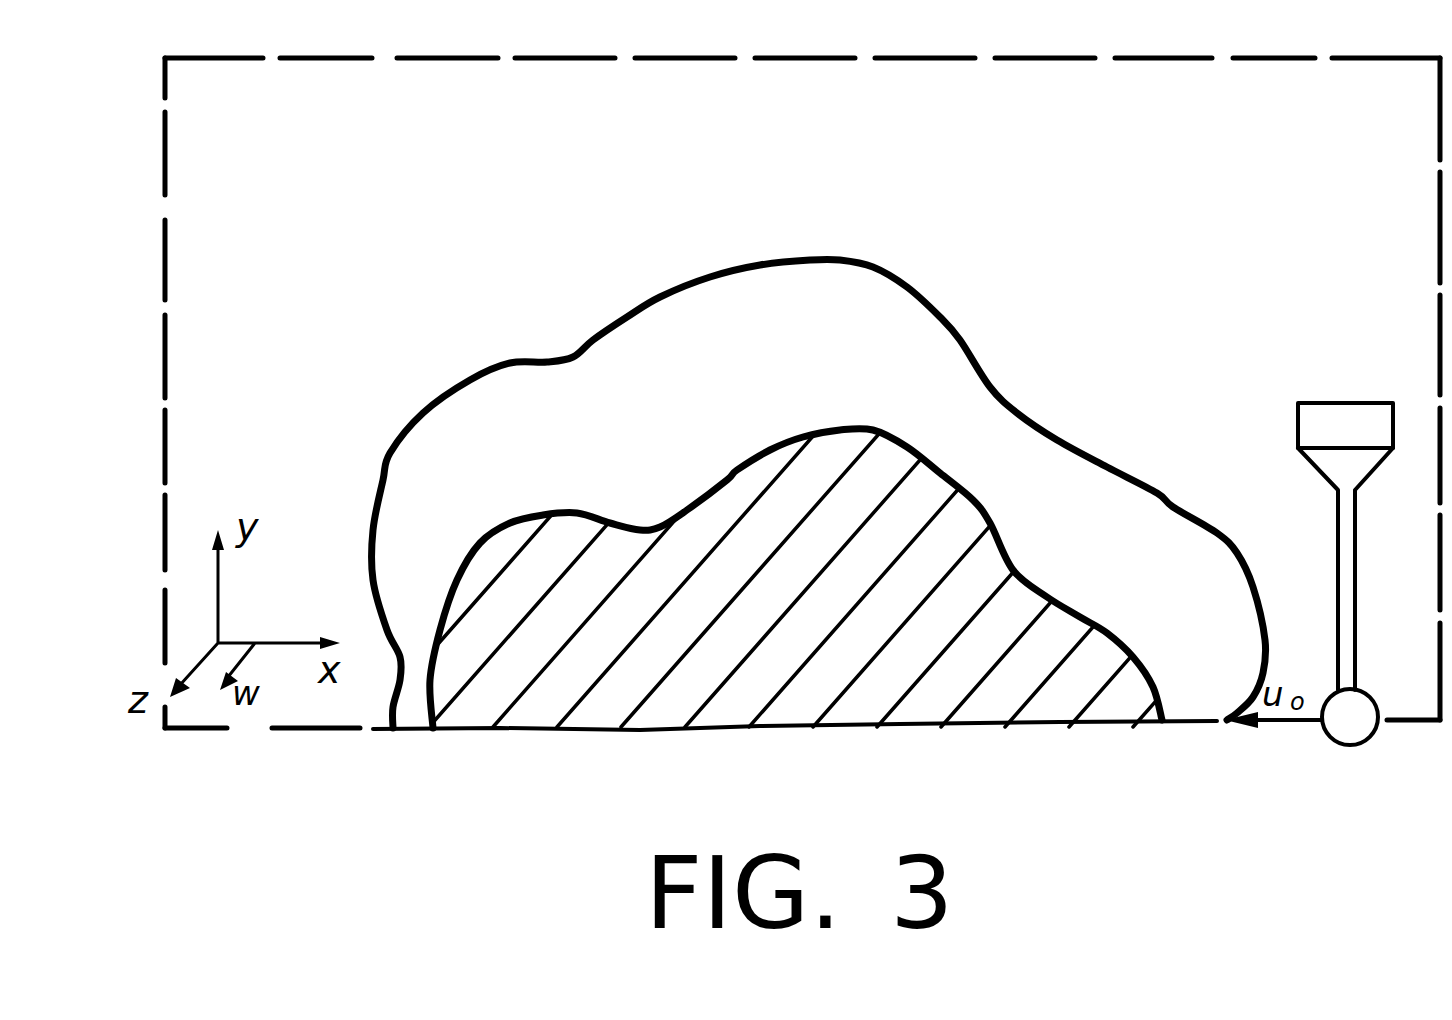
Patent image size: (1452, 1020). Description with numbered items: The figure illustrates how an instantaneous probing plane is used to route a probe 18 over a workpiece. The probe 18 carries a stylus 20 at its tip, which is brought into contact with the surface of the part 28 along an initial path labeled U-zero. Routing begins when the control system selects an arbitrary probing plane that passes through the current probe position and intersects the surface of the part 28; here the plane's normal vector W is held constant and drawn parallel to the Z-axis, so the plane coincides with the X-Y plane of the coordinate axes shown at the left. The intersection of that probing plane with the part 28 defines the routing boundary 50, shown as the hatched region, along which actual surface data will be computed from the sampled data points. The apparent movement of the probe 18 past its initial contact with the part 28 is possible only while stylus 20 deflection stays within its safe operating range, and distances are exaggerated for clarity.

The probe 18 is at (1313, 415).
The stylus 20 is at (1363, 713).
The part 28 is at (920, 358).
The routing boundary 50 is at (760, 457).